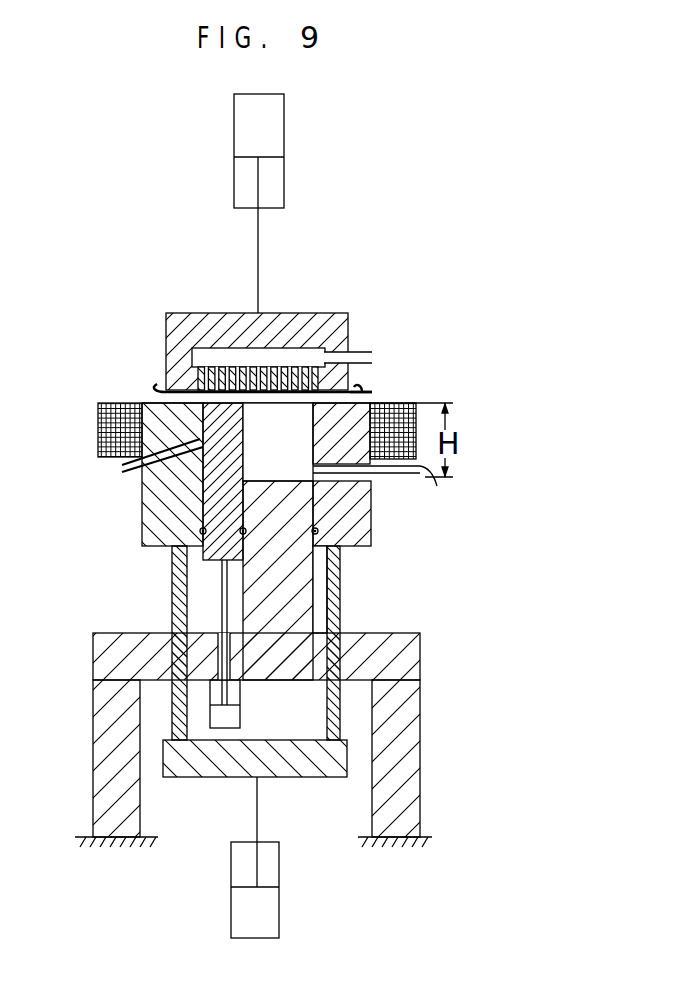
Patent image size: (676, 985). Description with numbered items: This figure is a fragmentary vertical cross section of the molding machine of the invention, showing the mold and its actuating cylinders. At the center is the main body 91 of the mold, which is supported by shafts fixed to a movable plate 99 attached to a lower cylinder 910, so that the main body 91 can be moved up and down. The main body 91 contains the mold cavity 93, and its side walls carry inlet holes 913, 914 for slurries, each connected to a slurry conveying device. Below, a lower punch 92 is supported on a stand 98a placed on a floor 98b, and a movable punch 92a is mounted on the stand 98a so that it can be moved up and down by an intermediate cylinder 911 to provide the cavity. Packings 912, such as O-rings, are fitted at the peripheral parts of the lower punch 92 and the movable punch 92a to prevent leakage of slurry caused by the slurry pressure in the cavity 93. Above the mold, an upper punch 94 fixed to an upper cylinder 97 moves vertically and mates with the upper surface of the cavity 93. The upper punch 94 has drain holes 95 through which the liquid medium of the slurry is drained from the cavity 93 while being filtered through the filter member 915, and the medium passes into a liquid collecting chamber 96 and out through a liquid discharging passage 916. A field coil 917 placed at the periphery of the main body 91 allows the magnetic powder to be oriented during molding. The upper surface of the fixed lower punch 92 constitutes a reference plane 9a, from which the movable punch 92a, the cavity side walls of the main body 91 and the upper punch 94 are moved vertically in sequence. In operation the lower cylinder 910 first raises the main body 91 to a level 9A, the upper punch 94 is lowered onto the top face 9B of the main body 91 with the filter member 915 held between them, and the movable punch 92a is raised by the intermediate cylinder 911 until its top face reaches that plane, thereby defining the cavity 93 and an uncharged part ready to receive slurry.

The upper cylinder 97 is at (283, 187).
The upper punch 94 is at (176, 322).
The liquid collecting chamber 96 is at (278, 355).
The drain holes 95 is at (300, 388).
The liquid discharging passage 916 is at (372, 350).
The filter member 915 is at (160, 388).
The top face of the main body 9B is at (381, 379).
The level of the main body 9A is at (302, 386).
The main body of mold 91 is at (143, 513).
The movable punch 92a is at (240, 557).
The reference plane 9a is at (285, 473).
The mold cavity 93 is at (296, 428).
The field coil 917 is at (100, 426).
The inlet hole 914 is at (122, 468).
The inlet hole 913 is at (420, 470).
The lower punch 92 is at (300, 583).
The packings 912 is at (316, 532).
The movable plate 99 is at (335, 612).
The stand 98a is at (98, 720).
The intermediate cylinder 911 is at (232, 694).
The floor 98b is at (125, 847).
The lower cylinder 910 is at (278, 870).